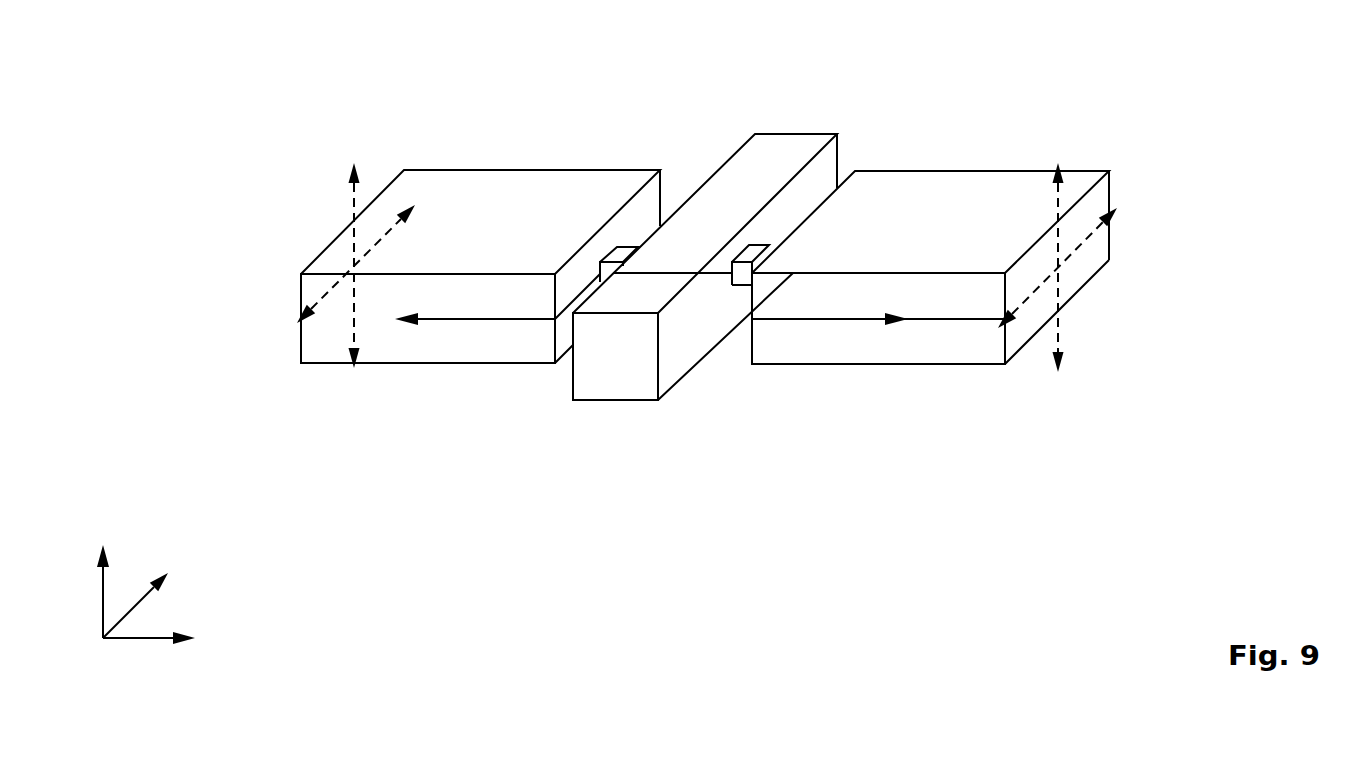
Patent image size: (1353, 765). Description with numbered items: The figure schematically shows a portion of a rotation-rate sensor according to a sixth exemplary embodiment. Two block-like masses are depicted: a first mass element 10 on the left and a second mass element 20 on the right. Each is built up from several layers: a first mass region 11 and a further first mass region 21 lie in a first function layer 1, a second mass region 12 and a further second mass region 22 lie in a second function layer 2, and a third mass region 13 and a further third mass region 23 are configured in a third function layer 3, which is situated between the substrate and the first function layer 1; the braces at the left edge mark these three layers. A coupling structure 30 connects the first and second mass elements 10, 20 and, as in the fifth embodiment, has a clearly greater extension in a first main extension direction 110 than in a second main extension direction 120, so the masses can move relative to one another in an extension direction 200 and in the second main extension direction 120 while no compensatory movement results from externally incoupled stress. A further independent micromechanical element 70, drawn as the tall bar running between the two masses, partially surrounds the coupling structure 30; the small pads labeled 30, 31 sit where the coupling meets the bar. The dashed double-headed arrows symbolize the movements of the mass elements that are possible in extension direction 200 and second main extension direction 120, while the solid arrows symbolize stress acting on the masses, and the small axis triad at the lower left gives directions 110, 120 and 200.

The first function layer 1 is at (297, 308).
The second function layer 2 is at (297, 268).
The third function layer 3 is at (297, 333).
The first mass element 10 is at (508, 193).
The first mass region 11 is at (378, 322).
The second mass region 12 is at (443, 293).
The third mass region 13 is at (333, 352).
The second mass element 20 is at (958, 195).
The further first mass region 21 is at (923, 320).
The further second mass region 22 is at (977, 292).
The further third mass region 23 is at (878, 353).
The coupling structure 30 is at (663, 328).
The second connecting element 31 is at (734, 292).
The further independent micromechanical element 70 is at (777, 157).
The first main extension direction 110 is at (243, 652).
The second main extension direction 120 is at (193, 569).
The extension direction 200 is at (123, 543).